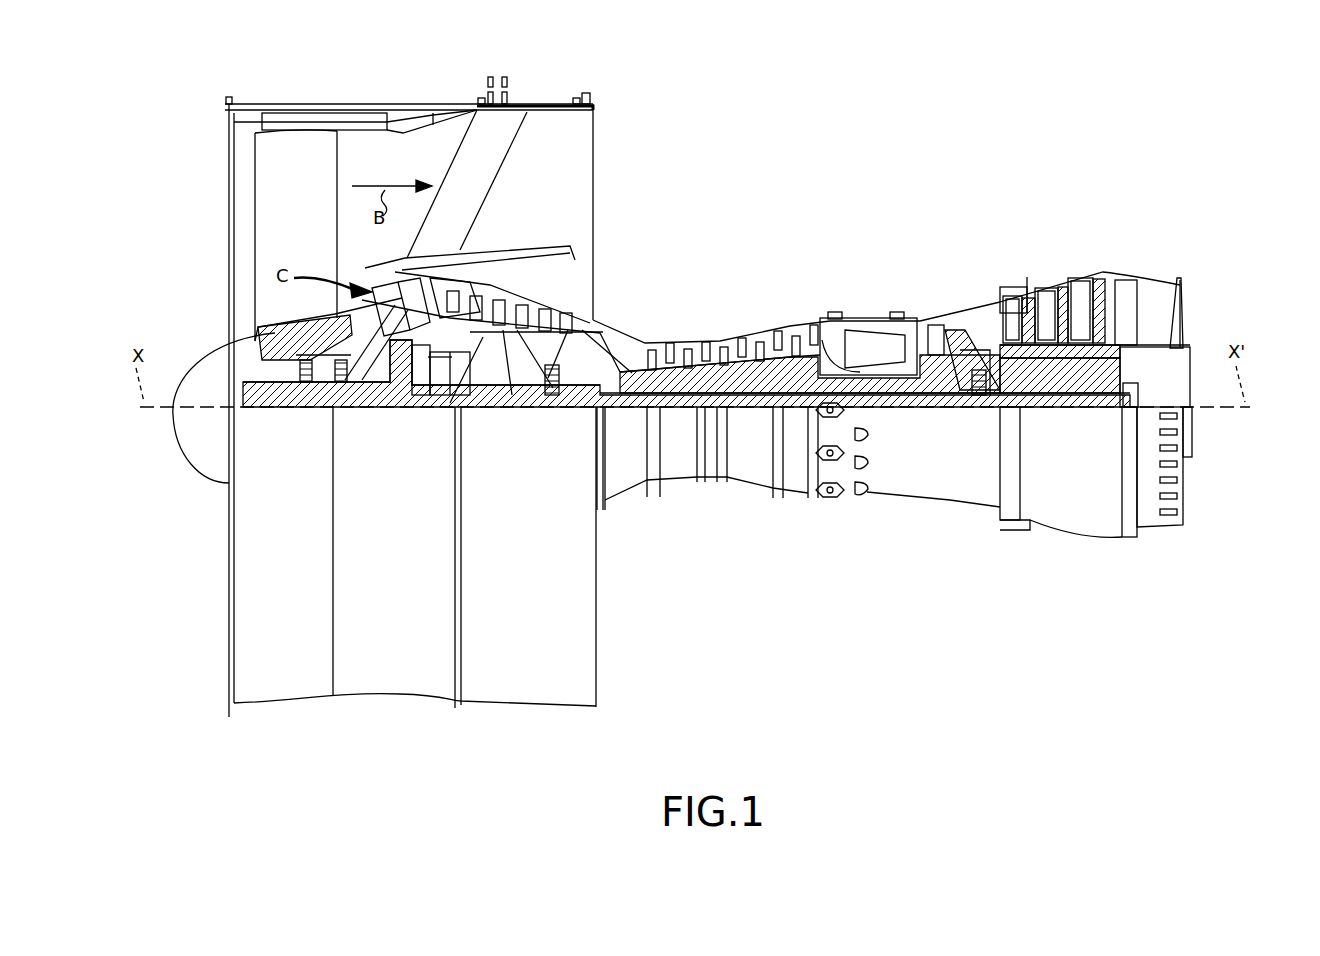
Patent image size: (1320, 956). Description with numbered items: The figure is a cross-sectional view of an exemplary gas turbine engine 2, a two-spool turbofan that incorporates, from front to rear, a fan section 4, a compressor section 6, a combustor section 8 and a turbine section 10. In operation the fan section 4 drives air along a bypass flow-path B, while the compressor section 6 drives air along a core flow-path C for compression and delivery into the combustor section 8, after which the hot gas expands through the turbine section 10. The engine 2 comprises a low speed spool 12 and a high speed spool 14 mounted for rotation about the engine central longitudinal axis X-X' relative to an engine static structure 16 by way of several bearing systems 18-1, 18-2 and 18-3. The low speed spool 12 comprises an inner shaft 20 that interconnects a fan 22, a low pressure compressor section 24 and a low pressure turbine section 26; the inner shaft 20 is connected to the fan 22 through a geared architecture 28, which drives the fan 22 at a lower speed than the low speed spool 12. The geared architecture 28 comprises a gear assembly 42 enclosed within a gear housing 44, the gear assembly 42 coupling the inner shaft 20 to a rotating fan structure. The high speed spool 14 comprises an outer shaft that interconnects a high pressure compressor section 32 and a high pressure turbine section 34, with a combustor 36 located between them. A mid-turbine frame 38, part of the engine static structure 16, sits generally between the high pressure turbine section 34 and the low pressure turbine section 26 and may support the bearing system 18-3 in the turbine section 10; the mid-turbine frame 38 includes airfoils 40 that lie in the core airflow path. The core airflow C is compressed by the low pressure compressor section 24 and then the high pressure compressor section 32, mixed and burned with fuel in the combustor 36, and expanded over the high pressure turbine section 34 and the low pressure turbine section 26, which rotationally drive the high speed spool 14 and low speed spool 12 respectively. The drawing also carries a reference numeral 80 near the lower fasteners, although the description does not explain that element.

The gas turbine engine 2 is at (914, 132).
The fan section 4 is at (450, 88).
The compressor section 6 is at (455, 213).
The combustor section 8 is at (920, 213).
The turbine section 10 is at (1125, 213).
The low speed spool 12 is at (757, 418).
The high speed spool 14 is at (795, 372).
The engine static structure 16 is at (390, 682).
The bearing system 18-1 is at (311, 388).
The bearing system 18-2 is at (549, 400).
The bearing system 18-3 is at (974, 400).
The inner shaft 20 is at (614, 410).
The fan 22 is at (415, 255).
The low pressure compressor section 24 is at (530, 300).
The low pressure turbine section 26 is at (1060, 295).
The geared architecture 28 is at (420, 418).
The high pressure compressor section 32 is at (735, 372).
The high pressure turbine section 34 is at (936, 326).
The combustor 36 is at (865, 352).
The mid-turbine frame 38 is at (975, 330).
The airfoils 40 is at (985, 340).
The gear assembly 42 is at (425, 390).
The gear housing 44 is at (425, 362).
The fastener 80 is at (862, 395).